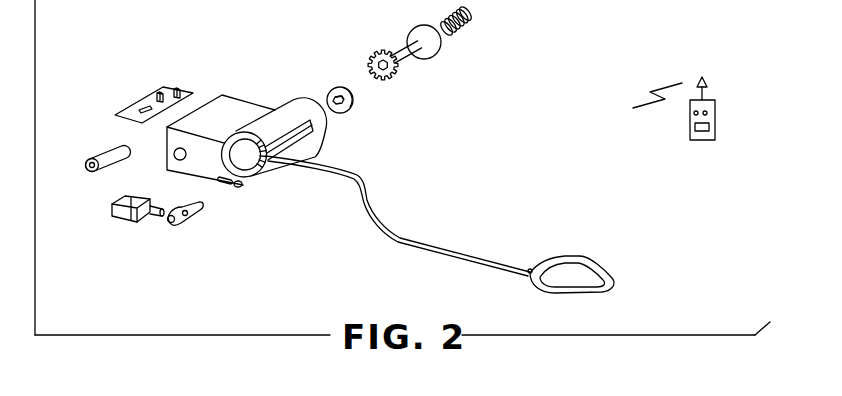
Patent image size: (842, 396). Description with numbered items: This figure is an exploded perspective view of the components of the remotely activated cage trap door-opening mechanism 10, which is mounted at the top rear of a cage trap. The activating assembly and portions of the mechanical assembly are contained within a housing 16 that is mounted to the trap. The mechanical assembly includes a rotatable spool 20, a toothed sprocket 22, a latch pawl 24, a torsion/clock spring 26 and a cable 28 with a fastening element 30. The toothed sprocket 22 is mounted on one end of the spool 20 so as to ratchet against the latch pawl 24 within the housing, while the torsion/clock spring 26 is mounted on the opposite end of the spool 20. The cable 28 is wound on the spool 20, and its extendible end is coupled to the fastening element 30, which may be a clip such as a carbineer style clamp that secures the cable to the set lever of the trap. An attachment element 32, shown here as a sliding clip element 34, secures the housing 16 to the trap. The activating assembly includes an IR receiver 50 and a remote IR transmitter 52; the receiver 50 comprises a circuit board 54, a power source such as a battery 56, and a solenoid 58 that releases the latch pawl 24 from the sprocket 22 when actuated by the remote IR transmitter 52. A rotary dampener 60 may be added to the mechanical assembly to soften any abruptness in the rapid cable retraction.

The door-opening mechanism 10 is at (287, 38).
The housing 16 is at (240, 110).
The rotatable spool 20 is at (400, 50).
The toothed sprocket 22 is at (397, 75).
The latch pawl 24 is at (177, 223).
The torsion/clock spring 26 is at (463, 24).
The cable 28 is at (432, 240).
The fastening element 30 is at (608, 272).
The attachment element 32 is at (223, 195).
The sliding clip element 34 is at (240, 186).
The IR receiver 50 is at (191, 80).
The remote IR transmitter 52 is at (690, 120).
The circuit board 54 is at (137, 105).
The battery 56 is at (105, 155).
The solenoid 58 is at (110, 211).
The rotary dampener 60 is at (363, 98).